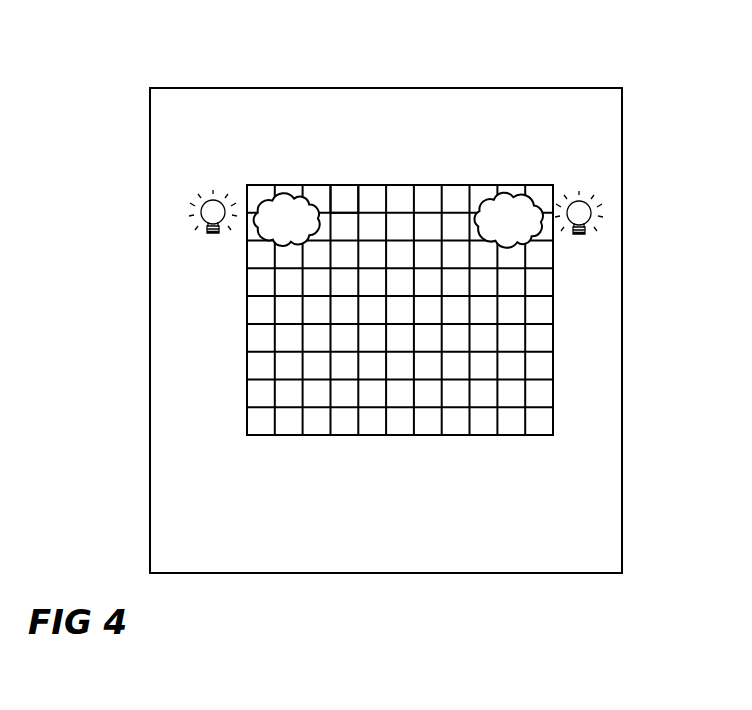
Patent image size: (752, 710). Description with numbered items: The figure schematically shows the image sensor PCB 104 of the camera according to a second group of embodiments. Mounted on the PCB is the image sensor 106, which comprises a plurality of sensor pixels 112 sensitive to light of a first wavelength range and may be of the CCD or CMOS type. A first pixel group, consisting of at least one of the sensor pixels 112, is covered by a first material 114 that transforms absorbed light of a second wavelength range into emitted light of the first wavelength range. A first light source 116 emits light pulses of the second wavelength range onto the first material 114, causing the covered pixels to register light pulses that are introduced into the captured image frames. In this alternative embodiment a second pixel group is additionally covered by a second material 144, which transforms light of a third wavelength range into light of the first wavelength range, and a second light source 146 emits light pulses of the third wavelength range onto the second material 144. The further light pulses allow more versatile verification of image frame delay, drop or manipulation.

The image sensor PCB 104 is at (214, 88).
The image sensor 106 is at (441, 185).
The sensor pixels 112 is at (343, 211).
The first material 114 is at (276, 243).
The second material 144 is at (503, 197).
The first light source 116 is at (192, 200).
The second light source 146 is at (598, 207).